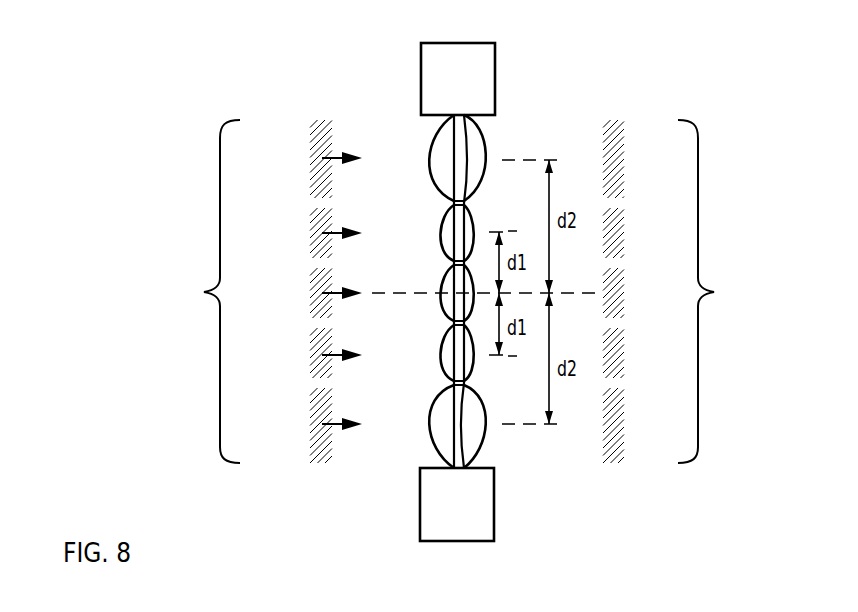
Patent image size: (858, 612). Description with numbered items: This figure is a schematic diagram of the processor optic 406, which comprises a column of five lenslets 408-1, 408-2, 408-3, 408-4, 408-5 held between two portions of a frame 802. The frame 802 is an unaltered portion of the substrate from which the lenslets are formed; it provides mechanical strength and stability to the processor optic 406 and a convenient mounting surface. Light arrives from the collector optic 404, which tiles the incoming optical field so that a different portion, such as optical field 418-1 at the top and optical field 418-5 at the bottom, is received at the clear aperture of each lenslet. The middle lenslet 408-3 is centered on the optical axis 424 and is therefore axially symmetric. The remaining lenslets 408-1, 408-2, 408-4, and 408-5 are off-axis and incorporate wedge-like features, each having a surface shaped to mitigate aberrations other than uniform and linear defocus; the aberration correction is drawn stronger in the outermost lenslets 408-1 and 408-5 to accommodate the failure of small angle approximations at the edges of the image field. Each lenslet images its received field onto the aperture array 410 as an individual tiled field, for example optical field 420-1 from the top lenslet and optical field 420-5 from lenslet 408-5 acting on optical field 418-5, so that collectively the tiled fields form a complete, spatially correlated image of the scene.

The processor optic 406 is at (194, 61).
The collector optic 404 is at (154, 291).
The aperture array 410 is at (762, 291).
The optical field 418-1 is at (312, 148).
The optical field 418-5 is at (312, 440).
The optical field 420-1 is at (623, 148).
The optical field 420-5 is at (622, 440).
The lenslet 408-1 is at (450, 150).
The lenslet 408-2 is at (448, 222).
The lenslet 408-3 is at (448, 282).
The lenslet 408-4 is at (448, 362).
The lenslet 408-5 is at (450, 440).
The optical axis 424 is at (433, 295).
The frame 802 is at (475, 541).